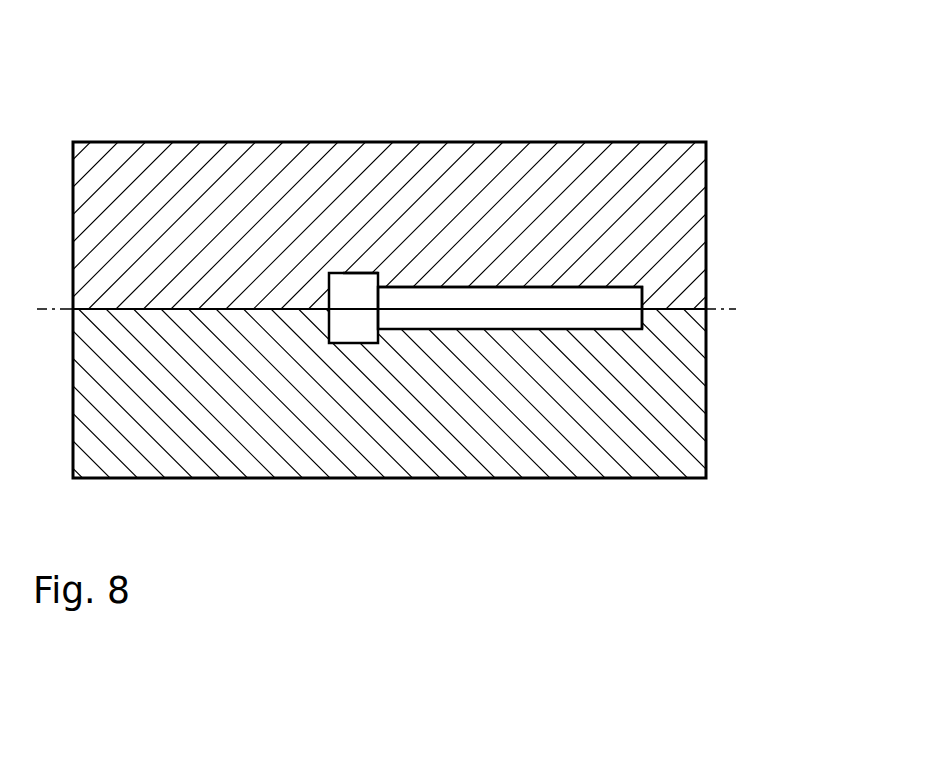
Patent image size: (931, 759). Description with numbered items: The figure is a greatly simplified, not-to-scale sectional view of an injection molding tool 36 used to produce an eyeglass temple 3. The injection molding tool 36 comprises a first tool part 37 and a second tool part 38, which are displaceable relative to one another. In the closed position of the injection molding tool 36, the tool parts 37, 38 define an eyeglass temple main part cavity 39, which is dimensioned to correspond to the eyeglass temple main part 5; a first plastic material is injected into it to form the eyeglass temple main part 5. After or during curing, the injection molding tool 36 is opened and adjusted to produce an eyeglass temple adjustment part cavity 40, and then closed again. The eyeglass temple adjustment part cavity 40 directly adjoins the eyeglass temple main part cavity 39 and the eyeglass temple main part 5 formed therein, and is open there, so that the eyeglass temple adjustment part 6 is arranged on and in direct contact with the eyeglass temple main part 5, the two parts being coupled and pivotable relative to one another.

The eyeglass temple 3 is at (546, 286).
The eyeglass temple main part 5 is at (343, 273).
The eyeglass temple adjustment part 6 is at (501, 291).
The injection molding tool 36 is at (718, 317).
The first tool part 37 is at (702, 234).
The second tool part 38 is at (702, 405).
The eyeglass temple main part cavity 39 is at (367, 285).
The eyeglass temple adjustment part cavity 40 is at (464, 292).